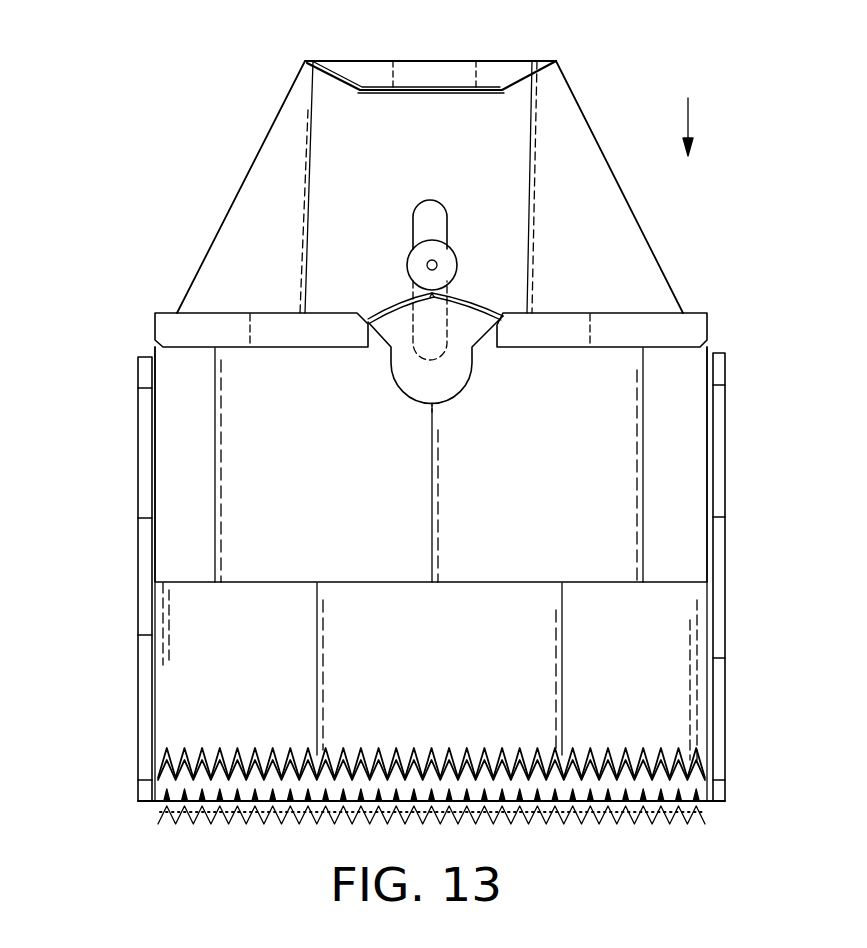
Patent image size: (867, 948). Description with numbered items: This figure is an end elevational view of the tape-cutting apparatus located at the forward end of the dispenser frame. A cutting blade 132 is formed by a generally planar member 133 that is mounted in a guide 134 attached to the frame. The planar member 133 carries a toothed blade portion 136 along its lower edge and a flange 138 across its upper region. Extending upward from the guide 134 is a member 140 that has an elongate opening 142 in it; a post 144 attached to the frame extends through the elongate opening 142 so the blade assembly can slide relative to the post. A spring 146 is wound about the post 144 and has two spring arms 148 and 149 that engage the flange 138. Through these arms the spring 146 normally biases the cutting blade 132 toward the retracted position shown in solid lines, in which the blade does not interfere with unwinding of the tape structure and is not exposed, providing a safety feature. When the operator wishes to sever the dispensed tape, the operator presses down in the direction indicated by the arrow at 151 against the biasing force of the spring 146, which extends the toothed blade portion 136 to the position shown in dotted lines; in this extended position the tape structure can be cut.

The cutting blade 132 is at (709, 343).
The generally planar member 133 is at (690, 432).
The guide 134 is at (724, 501).
The toothed blade portion 136 is at (205, 752).
The flange 138 is at (213, 310).
The member 140 is at (569, 111).
The elongate opening 142 is at (423, 218).
The post 144 is at (418, 262).
The spring 146 is at (462, 293).
The spring arm 148 is at (485, 308).
The spring arm 149 is at (395, 310).
The arrow 151 is at (692, 116).